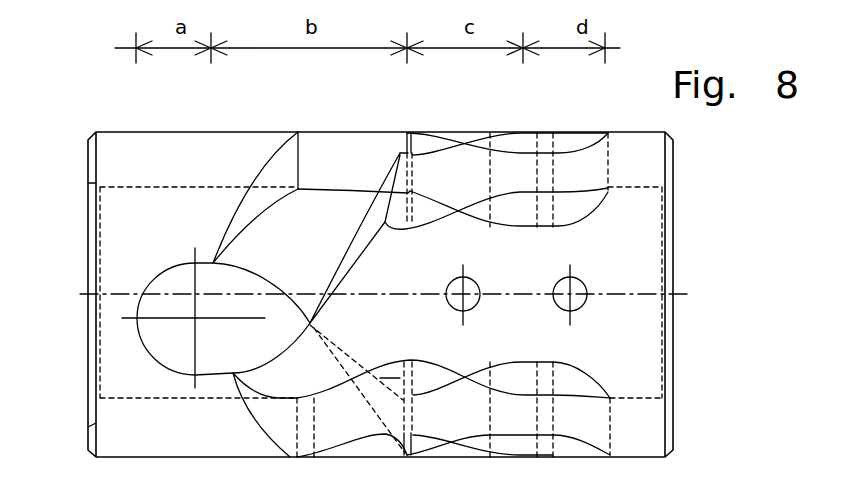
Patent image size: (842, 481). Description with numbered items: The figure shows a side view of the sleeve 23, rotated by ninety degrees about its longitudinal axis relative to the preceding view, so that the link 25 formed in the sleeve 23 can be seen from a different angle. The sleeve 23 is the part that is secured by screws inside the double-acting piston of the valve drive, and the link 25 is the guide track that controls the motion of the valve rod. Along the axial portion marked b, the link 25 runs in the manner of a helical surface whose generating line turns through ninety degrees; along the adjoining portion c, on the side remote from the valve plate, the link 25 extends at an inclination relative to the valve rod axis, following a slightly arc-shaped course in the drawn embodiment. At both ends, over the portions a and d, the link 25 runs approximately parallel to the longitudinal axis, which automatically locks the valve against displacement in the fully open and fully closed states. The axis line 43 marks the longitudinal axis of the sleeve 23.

The sleeve 23 is at (638, 367).
The link 25 is at (300, 228).
The longitudinal axis 43 is at (628, 296).